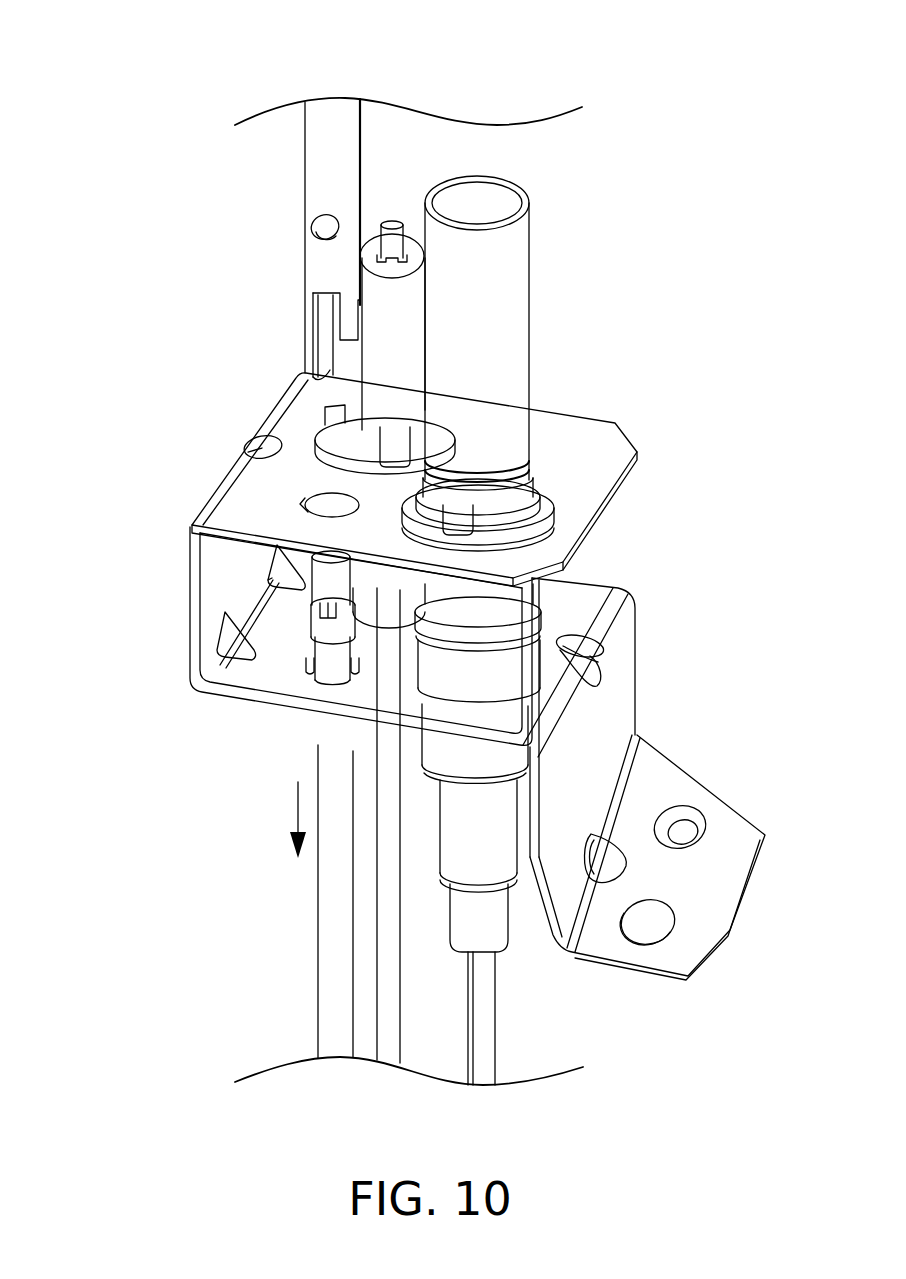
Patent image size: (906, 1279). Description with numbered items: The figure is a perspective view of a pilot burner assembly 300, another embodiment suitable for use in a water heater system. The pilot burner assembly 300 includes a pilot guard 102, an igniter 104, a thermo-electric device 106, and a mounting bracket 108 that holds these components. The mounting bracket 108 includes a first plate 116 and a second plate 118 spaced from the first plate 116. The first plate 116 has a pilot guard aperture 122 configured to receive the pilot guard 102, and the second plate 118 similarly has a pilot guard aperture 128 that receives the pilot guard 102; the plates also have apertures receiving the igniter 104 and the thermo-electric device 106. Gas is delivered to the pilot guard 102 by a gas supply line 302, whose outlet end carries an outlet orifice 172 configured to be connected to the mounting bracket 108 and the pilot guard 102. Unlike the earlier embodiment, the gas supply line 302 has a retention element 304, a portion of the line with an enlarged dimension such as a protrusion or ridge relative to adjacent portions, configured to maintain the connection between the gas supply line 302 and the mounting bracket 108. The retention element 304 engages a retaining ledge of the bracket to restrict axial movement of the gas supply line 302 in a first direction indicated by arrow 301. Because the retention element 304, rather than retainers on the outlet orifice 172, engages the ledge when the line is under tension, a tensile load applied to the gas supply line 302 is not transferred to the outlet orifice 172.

The pilot burner assembly 300 is at (194, 62).
The pilot guard 102 is at (323, 150).
The igniter 104 is at (410, 216).
The thermo-electric device 106 is at (548, 300).
The mounting bracket 108 is at (172, 594).
The first plate 116 is at (582, 438).
The second plate 118 is at (578, 602).
The pilot guard aperture 122 is at (300, 510).
The pilot guard aperture 128 is at (299, 677).
The outlet orifice 172 is at (286, 598).
The arrow 301 is at (298, 810).
The gas supply line 302 is at (304, 940).
The retention element 304 is at (286, 649).